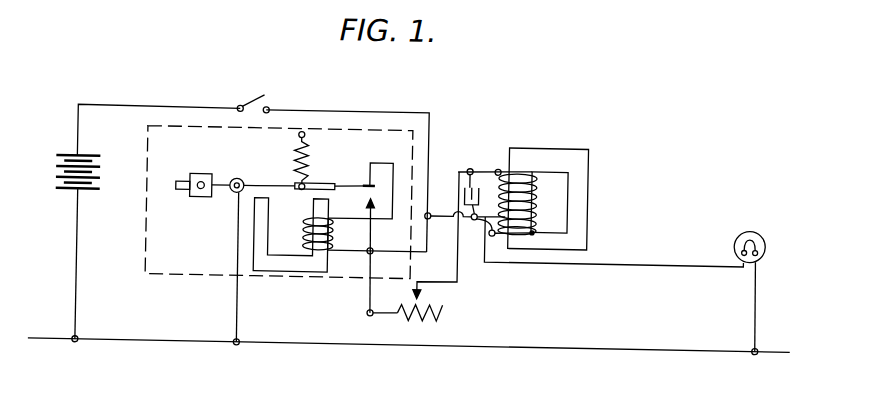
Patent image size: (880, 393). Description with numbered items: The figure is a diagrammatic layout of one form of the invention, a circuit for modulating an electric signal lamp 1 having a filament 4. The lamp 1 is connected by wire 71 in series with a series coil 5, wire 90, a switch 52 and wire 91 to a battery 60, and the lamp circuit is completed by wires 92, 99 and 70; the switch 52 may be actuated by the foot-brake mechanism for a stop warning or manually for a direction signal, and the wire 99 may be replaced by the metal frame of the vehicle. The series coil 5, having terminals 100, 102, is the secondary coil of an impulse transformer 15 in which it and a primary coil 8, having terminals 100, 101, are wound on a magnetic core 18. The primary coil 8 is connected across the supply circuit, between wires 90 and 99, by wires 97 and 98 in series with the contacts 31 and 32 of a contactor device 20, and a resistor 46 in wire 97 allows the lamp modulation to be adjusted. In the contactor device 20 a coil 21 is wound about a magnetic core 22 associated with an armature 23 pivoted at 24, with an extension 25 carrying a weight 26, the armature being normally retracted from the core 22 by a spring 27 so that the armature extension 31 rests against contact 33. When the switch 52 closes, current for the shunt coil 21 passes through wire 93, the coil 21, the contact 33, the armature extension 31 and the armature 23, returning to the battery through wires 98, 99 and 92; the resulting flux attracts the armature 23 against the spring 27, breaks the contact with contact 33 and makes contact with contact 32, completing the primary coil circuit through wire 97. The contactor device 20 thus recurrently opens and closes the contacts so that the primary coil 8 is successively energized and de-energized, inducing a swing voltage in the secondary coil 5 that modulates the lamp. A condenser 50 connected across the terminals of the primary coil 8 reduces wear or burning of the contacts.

The electric signal lamp 1 is at (756, 227).
The filament 4 is at (766, 240).
The series coil 5 is at (537, 226).
The primary coil 8 is at (534, 189).
The impulse transformer 15 is at (544, 145).
The core 18 is at (578, 194).
The contactor device 20 is at (161, 287).
The coil 21 is at (326, 238).
The magnetic core 22 is at (268, 241).
The armature 23 is at (289, 186).
The pivot 24 is at (235, 182).
The extension 25 is at (172, 201).
The weight 26 is at (192, 178).
The spring 27 is at (292, 154).
The armature extension 31 is at (367, 184).
The contact 32 is at (368, 206).
The contact 33 is at (370, 186).
The resistor 46 is at (441, 300).
The condenser 50 is at (484, 154).
The switch 52 is at (240, 104).
The battery 60 is at (70, 165).
The wire 70 is at (758, 301).
The wire 71 is at (668, 260).
The wire 90 is at (438, 214).
The wire 91 is at (138, 110).
The wire 92 is at (74, 272).
The wire 93 is at (400, 254).
The wire 97 is at (369, 298).
The wire 98 is at (247, 302).
The wire 99 is at (318, 342).
The terminal 100 is at (483, 230).
The terminal 101 is at (497, 168).
The terminal 102 is at (492, 235).